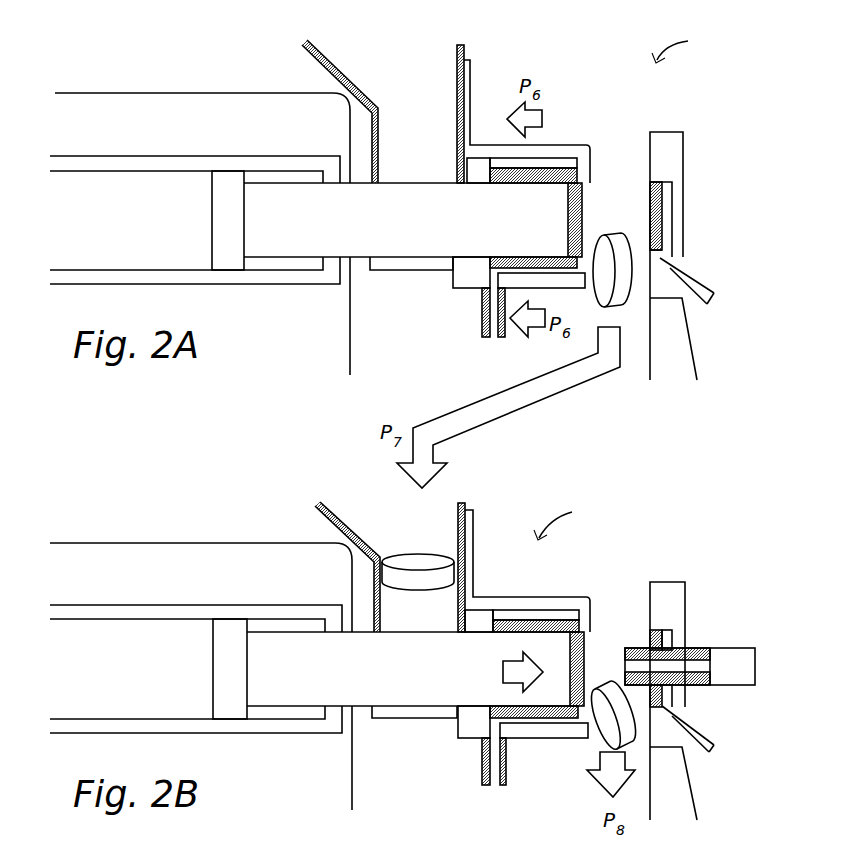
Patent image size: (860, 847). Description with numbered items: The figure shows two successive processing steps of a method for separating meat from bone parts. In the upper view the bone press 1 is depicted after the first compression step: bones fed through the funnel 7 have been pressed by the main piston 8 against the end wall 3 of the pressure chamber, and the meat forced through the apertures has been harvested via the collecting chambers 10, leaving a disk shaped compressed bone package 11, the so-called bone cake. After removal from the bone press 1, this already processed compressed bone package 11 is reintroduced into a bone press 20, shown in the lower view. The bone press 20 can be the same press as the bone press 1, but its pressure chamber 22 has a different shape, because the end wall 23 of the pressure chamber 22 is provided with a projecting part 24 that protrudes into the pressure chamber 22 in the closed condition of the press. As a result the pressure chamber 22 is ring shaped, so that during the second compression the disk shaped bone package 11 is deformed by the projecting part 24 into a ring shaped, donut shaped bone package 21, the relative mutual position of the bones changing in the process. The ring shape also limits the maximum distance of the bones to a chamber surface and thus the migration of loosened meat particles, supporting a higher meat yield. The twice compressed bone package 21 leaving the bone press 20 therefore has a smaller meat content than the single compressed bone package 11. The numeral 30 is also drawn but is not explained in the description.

In FIG. 2A, the bone press 1 is at (679, 43).
In FIG. 2A, the end wall 3 is at (649, 186).
In FIG. 2A, the funnel 7 is at (339, 72).
In FIG. 2A, the main piston 8 is at (403, 245).
In FIG. 2A, the collecting chambers 10 is at (554, 164).
In FIG. 2A, the compressed bone package 11 is at (614, 234).
In FIG. 2B, the compressed bone package 11 is at (421, 566).
In FIG. 2B, the bone press 20 is at (568, 522).
In FIG. 2B, the ring shaped bone package 21 is at (594, 742).
In FIG. 2B, the pressure chamber 22 is at (590, 647).
In FIG. 2B, the end wall 23 is at (672, 605).
In FIG. 2B, the projecting part 24 is at (636, 645).
In FIG. 2B, the assembly 30 is at (230, 840).